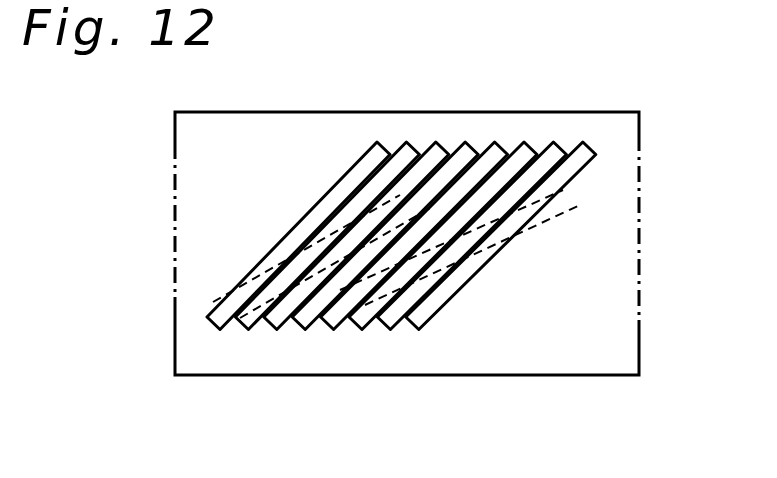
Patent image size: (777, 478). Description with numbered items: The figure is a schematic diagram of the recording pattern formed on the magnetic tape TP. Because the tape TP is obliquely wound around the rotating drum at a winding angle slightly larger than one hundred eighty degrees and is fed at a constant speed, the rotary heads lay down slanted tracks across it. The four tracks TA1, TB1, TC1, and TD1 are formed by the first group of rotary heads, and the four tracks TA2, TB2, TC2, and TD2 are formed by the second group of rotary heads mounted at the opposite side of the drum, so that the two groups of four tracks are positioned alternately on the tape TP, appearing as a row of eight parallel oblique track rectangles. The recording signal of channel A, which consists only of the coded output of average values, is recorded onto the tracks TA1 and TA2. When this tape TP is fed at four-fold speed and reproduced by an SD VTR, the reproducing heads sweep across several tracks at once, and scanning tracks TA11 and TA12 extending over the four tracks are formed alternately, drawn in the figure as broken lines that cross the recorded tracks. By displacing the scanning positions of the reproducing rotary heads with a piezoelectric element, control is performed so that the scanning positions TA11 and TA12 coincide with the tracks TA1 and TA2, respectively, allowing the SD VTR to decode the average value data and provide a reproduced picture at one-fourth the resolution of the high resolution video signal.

The magnetic tape TP is at (175, 143).
The track TA1 is at (352, 155).
The track TB1 is at (407, 143).
The track TC1 is at (440, 150).
The track TD1 is at (477, 150).
The track TA2 is at (329, 325).
The track TB2 is at (366, 330).
The track TC2 is at (402, 330).
The track TD2 is at (443, 304).
The scanning track TA11 is at (213, 302).
The scanning track TA12 is at (563, 190).